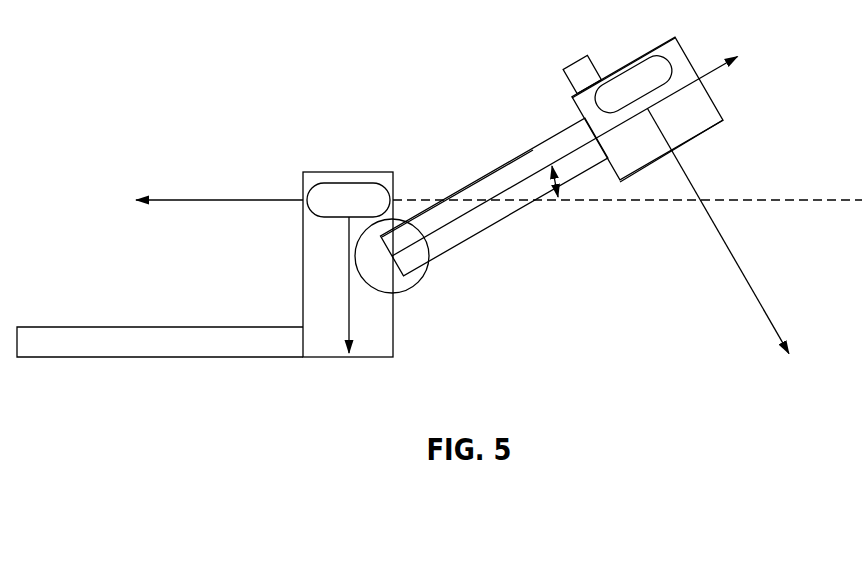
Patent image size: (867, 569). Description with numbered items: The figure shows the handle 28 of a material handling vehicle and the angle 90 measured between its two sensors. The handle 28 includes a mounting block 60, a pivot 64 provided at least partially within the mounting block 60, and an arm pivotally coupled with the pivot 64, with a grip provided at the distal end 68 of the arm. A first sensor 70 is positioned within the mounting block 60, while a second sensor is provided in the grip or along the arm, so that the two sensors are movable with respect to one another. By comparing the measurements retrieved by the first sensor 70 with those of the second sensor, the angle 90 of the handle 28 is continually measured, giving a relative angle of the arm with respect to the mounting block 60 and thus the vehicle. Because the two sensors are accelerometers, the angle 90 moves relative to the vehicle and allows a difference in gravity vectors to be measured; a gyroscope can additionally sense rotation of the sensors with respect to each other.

The handle 28 is at (442, 250).
The mounting block 60 is at (310, 172).
The pivot 64 is at (388, 267).
The distal end 68 is at (660, 56).
The first sensor 70 is at (350, 190).
The angle 90 is at (560, 178).